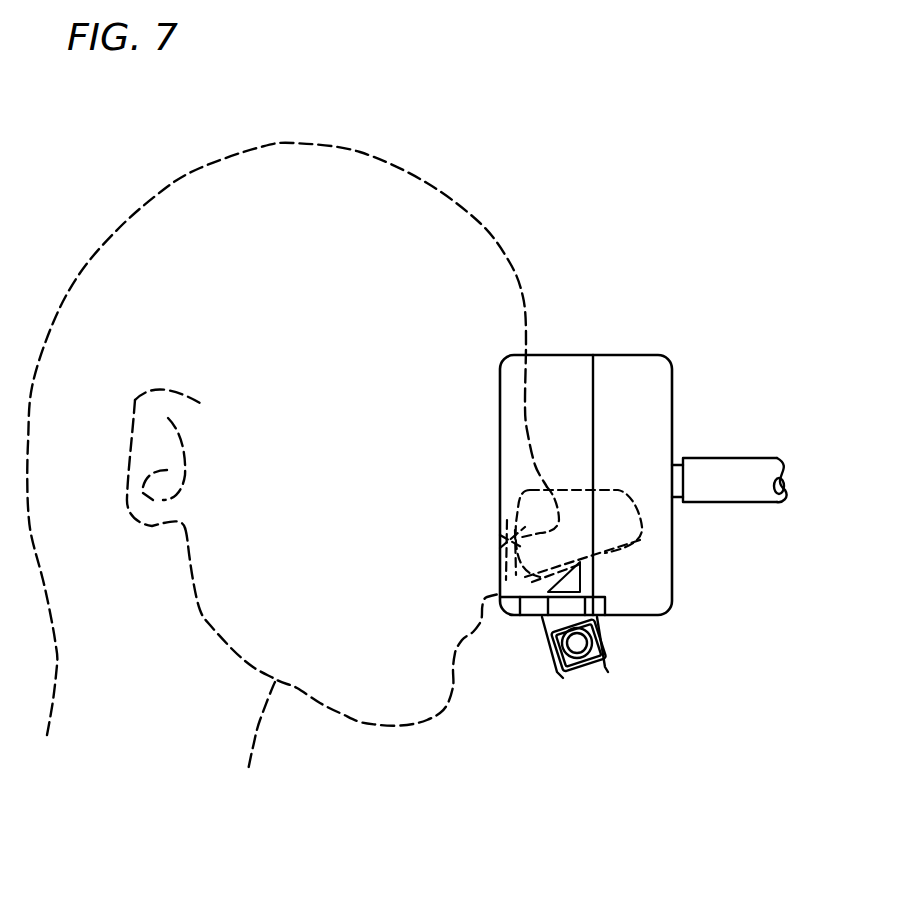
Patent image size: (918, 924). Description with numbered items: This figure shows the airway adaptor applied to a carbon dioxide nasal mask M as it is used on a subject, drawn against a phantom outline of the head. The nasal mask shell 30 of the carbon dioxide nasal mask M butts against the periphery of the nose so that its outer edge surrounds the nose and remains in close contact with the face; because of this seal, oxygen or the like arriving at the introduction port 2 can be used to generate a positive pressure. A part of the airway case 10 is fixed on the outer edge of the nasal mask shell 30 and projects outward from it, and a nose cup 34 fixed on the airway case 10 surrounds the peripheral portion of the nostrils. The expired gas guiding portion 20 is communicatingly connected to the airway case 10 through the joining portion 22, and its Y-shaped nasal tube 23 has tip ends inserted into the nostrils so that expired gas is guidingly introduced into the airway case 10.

The carbon dioxide nasal mask M is at (668, 332).
The nasal mask shell 30 is at (566, 390).
The nose cup 34 is at (600, 503).
The Y-shaped nasal tube 23 is at (503, 542).
The expired gas guiding portion 20 is at (583, 578).
The joining portion 22 is at (521, 620).
The introduction port 2 is at (680, 482).
The airway case 10 is at (553, 665).